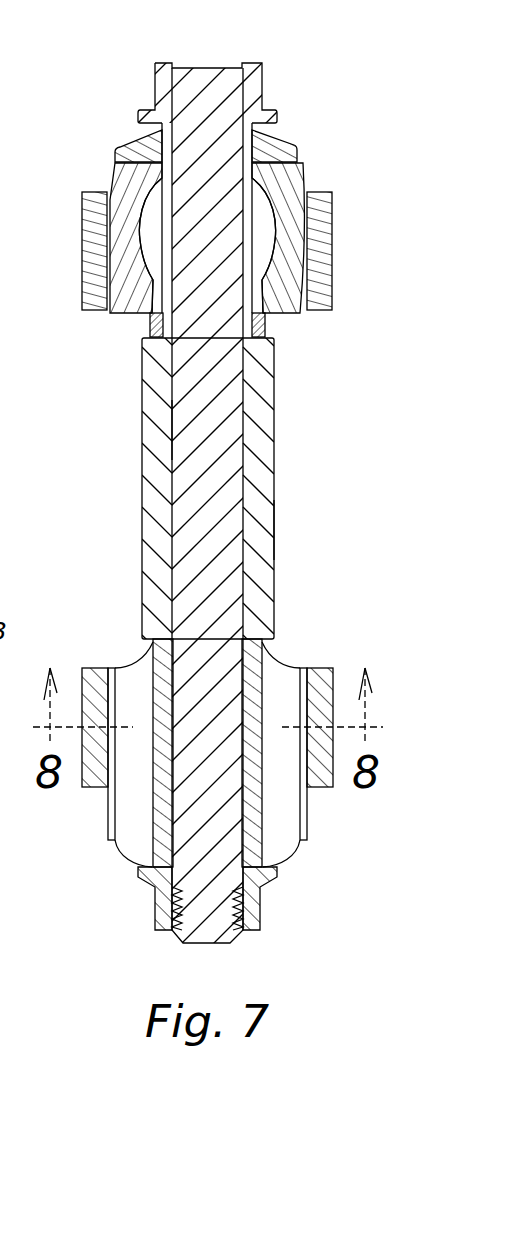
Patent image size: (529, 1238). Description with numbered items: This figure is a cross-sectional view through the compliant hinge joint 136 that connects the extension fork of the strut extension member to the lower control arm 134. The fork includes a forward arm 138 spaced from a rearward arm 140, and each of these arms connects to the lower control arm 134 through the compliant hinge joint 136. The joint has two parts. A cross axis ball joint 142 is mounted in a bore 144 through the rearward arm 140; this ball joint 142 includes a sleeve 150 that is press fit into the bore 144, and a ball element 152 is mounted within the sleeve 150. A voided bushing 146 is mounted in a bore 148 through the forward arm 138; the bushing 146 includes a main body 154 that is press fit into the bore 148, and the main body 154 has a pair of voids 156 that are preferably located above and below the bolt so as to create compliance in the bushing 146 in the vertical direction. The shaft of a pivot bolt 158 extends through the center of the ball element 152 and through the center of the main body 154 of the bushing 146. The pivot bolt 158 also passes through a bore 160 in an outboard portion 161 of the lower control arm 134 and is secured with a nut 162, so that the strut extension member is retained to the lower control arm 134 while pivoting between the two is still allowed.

The lower control arm 134 is at (276, 488).
The compliant hinge joint 136 is at (309, 167).
The forward arm 138 is at (82, 782).
The rearward arm 140 is at (332, 263).
The cross axis ball joint 142 is at (272, 262).
The bore 144 is at (112, 300).
The voided bushing 146 is at (308, 827).
The bore 148 is at (290, 663).
The sleeve 150 is at (112, 175).
The ball element 152 is at (143, 224).
The main body 154 is at (180, 673).
The voids 156 is at (108, 823).
The pivot bolt 158 is at (262, 422).
The bore 160 is at (172, 450).
The outboard portion 161 is at (276, 528).
The nut 162 is at (265, 933).